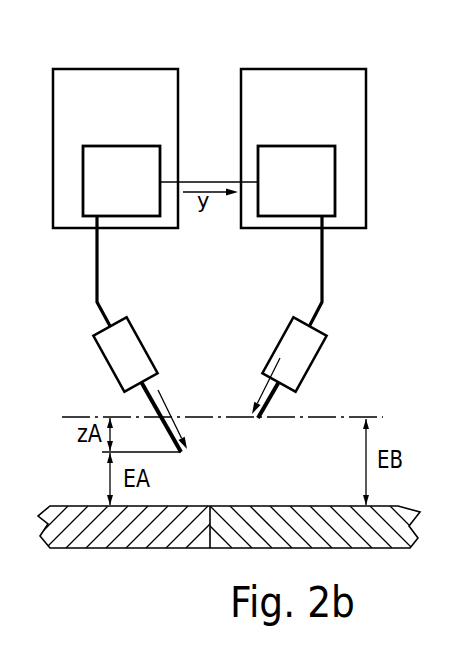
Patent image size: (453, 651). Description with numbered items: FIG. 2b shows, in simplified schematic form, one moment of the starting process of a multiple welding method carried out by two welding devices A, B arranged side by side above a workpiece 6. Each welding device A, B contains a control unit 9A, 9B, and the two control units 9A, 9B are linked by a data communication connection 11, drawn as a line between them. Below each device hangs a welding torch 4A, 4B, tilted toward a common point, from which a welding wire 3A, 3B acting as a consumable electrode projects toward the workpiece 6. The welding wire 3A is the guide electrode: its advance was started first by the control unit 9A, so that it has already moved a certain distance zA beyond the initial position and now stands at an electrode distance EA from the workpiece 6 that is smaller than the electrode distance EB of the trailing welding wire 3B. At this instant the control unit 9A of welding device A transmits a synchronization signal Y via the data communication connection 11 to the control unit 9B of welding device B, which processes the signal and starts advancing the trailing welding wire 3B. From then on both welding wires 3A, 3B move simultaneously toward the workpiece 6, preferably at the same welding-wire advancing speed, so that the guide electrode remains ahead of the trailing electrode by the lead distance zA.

The welding device A is at (92, 113).
The welding device B is at (350, 113).
The control unit 9A is at (140, 197).
The control unit 9B is at (320, 197).
The data communication connection 11 is at (195, 182).
The welding torch 4A is at (100, 353).
The welding torch 4B is at (312, 363).
The welding wire 3A is at (147, 400).
The welding wire 3B is at (272, 400).
The workpiece 6 is at (125, 530).